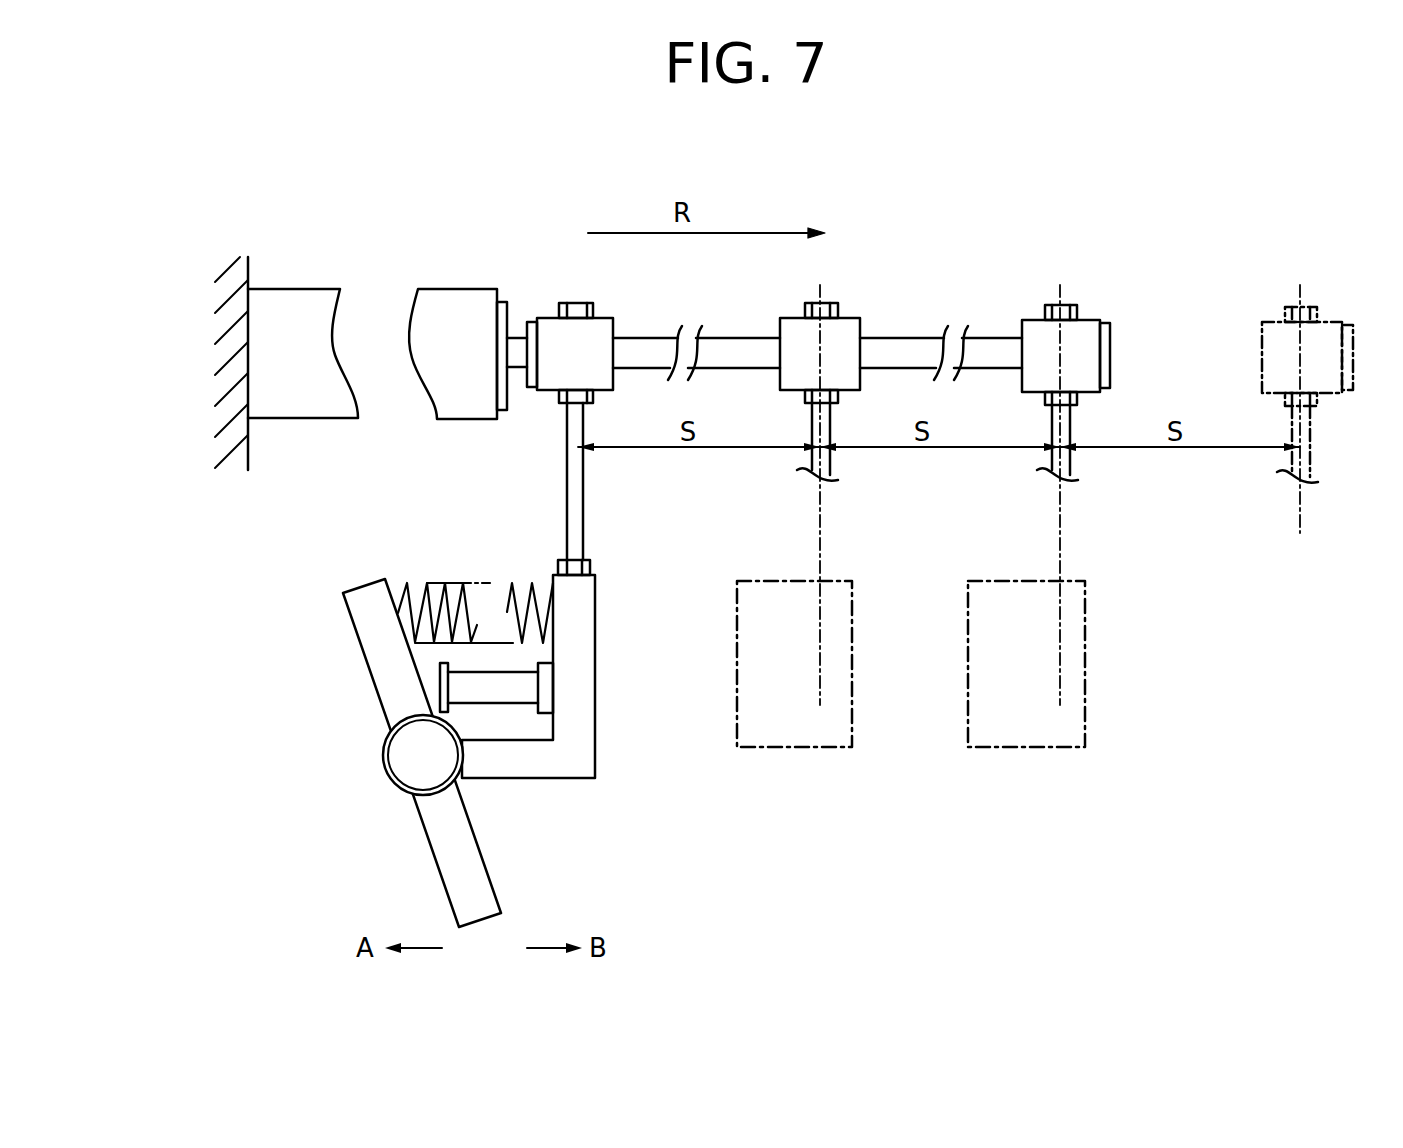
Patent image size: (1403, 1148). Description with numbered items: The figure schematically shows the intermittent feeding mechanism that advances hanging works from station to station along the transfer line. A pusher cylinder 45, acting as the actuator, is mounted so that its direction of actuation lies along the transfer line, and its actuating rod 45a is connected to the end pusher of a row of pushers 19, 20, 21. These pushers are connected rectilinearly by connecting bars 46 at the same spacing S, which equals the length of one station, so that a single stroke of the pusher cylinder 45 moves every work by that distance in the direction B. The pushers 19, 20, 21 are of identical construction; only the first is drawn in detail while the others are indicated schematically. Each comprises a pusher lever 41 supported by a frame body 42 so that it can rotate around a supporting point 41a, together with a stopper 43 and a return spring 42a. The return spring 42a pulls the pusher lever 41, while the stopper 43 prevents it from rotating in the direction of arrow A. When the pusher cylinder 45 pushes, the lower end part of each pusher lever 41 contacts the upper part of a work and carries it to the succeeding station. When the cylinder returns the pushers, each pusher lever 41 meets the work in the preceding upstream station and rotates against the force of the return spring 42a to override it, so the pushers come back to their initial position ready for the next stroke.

The pusher cylinder 45 is at (462, 307).
The actuating rod 45a is at (515, 345).
The connecting bar 46 is at (635, 353).
The pusher lever 41 is at (375, 637).
The supporting point 41a is at (413, 763).
The frame body 42 is at (572, 752).
The return spring 42a is at (452, 590).
The stopper 43 is at (482, 693).
The pusher 19 is at (526, 682).
The pusher 20 is at (782, 740).
The pusher 21 is at (1012, 740).